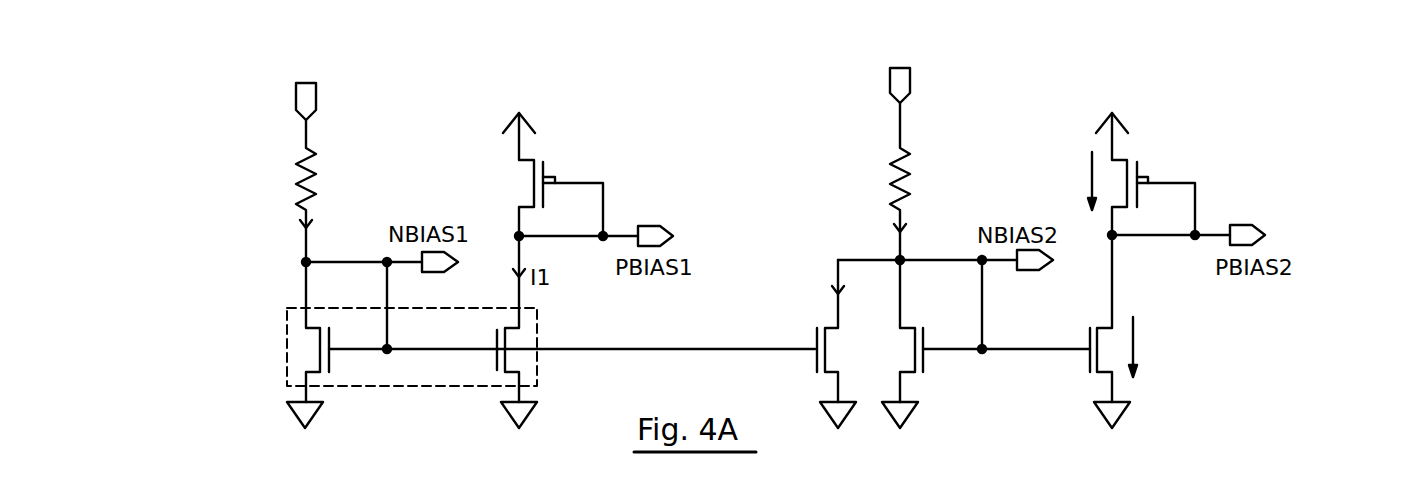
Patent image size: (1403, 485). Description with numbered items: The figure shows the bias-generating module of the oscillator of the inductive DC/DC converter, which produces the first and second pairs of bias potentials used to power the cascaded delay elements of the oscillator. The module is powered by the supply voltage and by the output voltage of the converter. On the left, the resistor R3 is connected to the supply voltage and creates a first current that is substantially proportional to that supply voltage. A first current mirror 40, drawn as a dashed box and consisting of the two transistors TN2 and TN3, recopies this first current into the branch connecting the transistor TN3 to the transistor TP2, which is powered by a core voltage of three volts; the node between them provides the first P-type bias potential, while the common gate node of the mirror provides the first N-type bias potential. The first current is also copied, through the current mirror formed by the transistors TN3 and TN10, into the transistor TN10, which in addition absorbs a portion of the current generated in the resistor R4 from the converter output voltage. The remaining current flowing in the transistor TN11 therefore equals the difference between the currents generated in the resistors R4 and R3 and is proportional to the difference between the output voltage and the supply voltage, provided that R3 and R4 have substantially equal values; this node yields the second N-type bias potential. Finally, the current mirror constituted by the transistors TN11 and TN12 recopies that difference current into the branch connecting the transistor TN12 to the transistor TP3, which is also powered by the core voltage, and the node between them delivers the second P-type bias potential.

The first current mirror 40 is at (287, 360).
The resistor R3 is at (314, 158).
The resistor R4 is at (905, 150).
The transistor TN2 is at (337, 345).
The transistor TN3 is at (488, 332).
The transistor TP2 is at (532, 160).
The transistor TP3 is at (1129, 160).
The transistor TN10 is at (801, 344).
The transistor TN11 is at (986, 344).
The transistor TN12 is at (1125, 331).